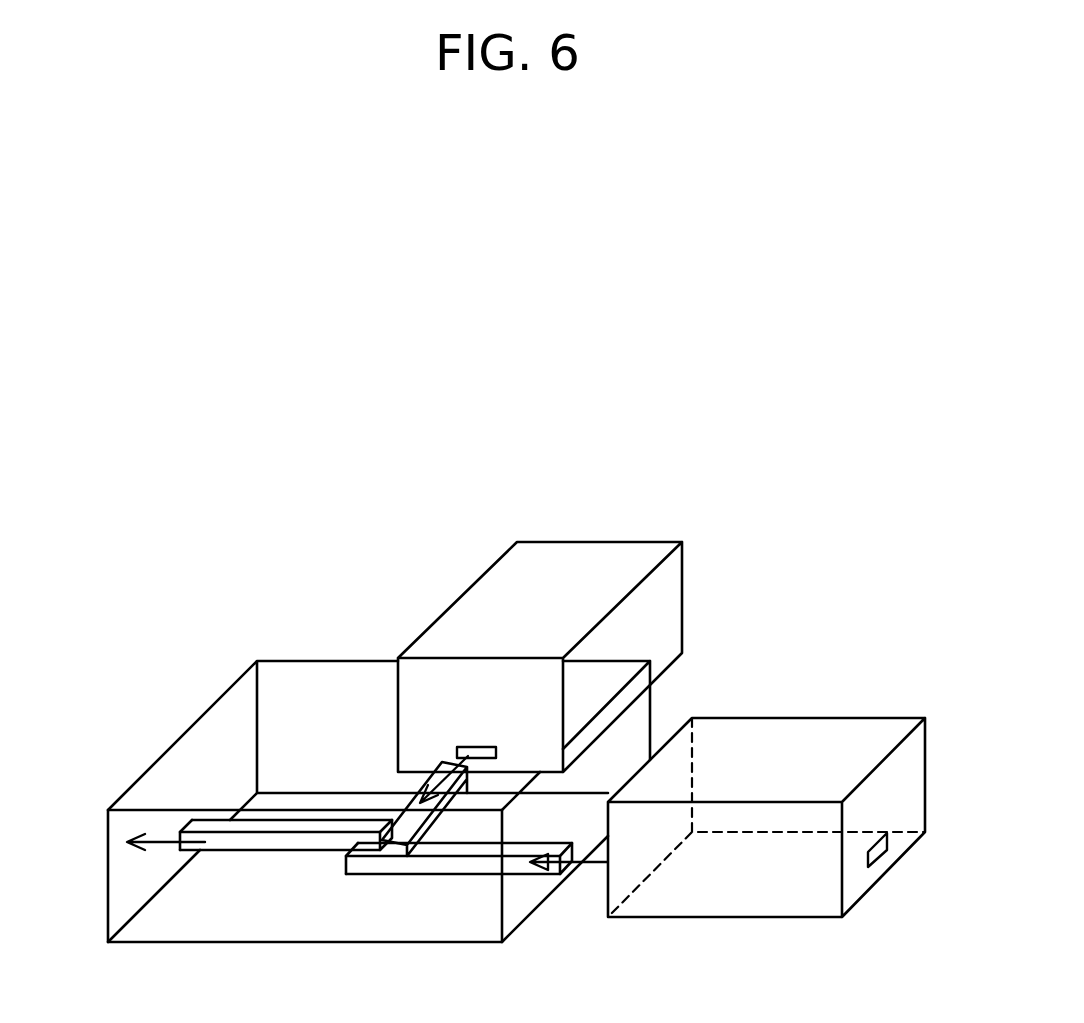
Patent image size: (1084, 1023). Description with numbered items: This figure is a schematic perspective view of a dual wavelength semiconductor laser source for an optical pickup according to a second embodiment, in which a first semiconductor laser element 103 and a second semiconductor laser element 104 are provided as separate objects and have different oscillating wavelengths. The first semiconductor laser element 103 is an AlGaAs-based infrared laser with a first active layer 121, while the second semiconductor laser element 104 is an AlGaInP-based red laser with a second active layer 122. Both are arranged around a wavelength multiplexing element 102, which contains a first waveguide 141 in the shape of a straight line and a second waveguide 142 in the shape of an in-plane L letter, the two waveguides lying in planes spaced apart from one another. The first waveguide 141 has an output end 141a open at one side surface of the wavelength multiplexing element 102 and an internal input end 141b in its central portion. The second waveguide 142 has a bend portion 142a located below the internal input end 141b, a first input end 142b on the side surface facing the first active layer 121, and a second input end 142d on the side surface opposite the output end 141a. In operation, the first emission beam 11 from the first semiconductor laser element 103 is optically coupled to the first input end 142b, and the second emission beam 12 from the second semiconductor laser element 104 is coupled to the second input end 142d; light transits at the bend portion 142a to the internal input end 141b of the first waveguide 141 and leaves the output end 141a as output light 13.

The first emission beam 11 is at (585, 611).
The second emission beam 12 is at (597, 864).
The output light 13 is at (160, 850).
The wavelength multiplexing element 102 is at (212, 705).
The first semiconductor laser element 103 is at (628, 542).
The second semiconductor laser element 104 is at (847, 717).
The first active layer 121 is at (480, 745).
The second active layer 122 is at (880, 866).
The first waveguide 141 is at (230, 817).
The output end 141a is at (206, 794).
The internal input end 141b is at (390, 785).
The second waveguide 142 is at (423, 875).
The bend portion 142a is at (366, 902).
The first input end 142b is at (455, 725).
The second input end 142d is at (551, 901).